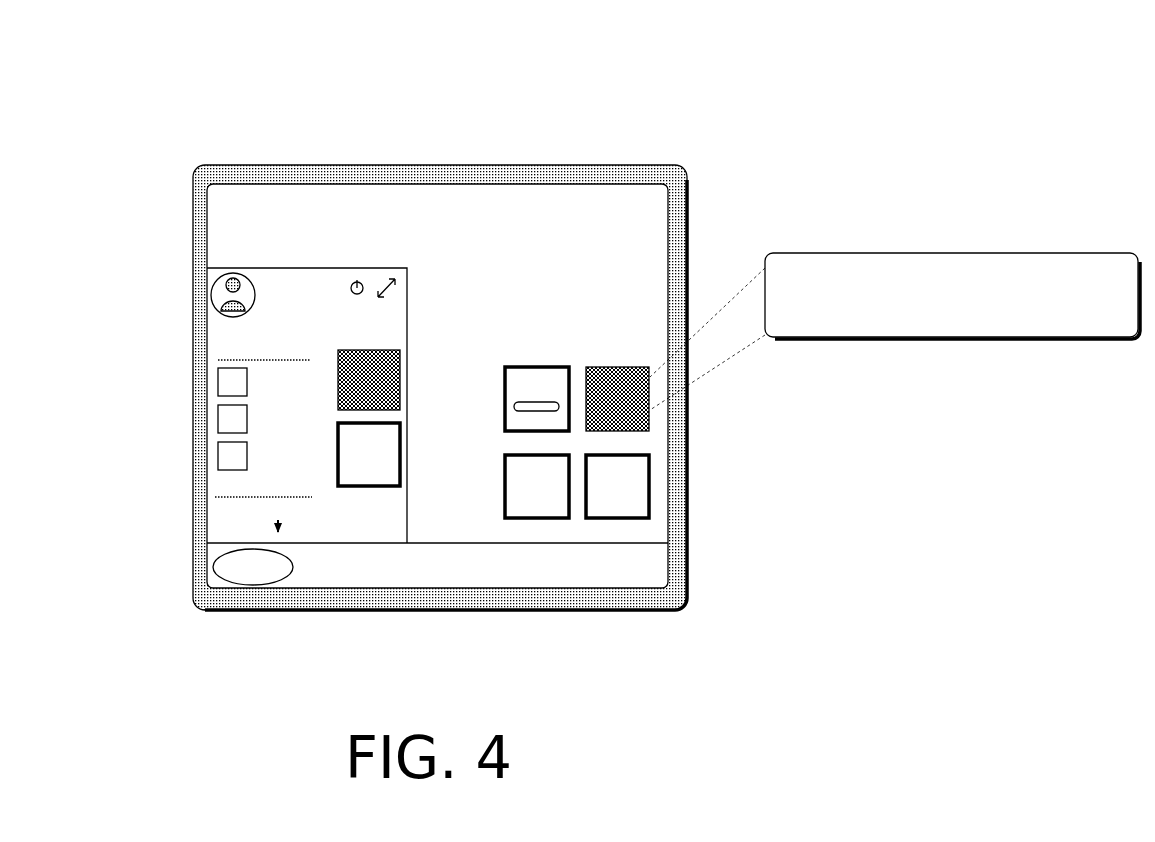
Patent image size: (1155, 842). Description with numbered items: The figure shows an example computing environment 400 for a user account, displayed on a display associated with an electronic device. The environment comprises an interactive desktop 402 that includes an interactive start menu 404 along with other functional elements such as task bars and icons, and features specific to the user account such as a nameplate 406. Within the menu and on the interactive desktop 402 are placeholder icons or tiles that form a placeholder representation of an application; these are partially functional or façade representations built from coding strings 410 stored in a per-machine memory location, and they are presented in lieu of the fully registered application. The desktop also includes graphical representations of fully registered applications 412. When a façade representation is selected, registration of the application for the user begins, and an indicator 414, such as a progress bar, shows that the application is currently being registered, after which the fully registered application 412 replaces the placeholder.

The computing environment 400 is at (128, 61).
The interactive desktop 402 is at (650, 208).
The interactive start menu 404 is at (216, 432).
The nameplate 406 is at (204, 281).
The coding strings 410 is at (1026, 274).
The fully registered applications 412 is at (607, 528).
The indicator 414 is at (544, 359).